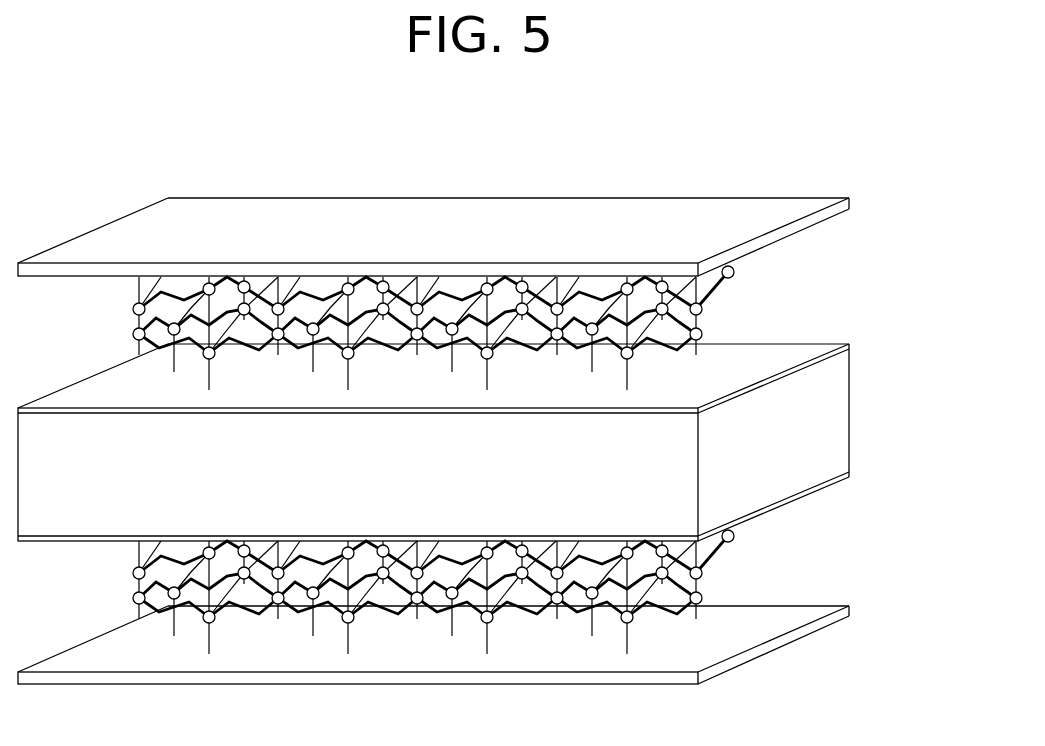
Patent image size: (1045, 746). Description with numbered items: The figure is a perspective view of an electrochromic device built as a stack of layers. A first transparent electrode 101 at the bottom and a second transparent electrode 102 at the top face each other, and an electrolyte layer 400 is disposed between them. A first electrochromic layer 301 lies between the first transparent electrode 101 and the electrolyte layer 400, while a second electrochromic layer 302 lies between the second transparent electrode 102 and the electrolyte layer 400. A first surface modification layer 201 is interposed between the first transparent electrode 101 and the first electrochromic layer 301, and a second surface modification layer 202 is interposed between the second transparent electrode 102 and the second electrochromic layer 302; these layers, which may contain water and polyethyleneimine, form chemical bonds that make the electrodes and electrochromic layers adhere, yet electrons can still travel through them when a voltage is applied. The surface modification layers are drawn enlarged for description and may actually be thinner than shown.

The first transparent electrode 101 is at (851, 610).
The second transparent electrode 102 is at (851, 203).
The first surface modification layer 201 is at (855, 475).
The second surface modification layer 202 is at (855, 210).
The first electrochromic layer 301 is at (851, 475).
The second electrochromic layer 302 is at (851, 345).
The electrolyte layer 400 is at (840, 405).